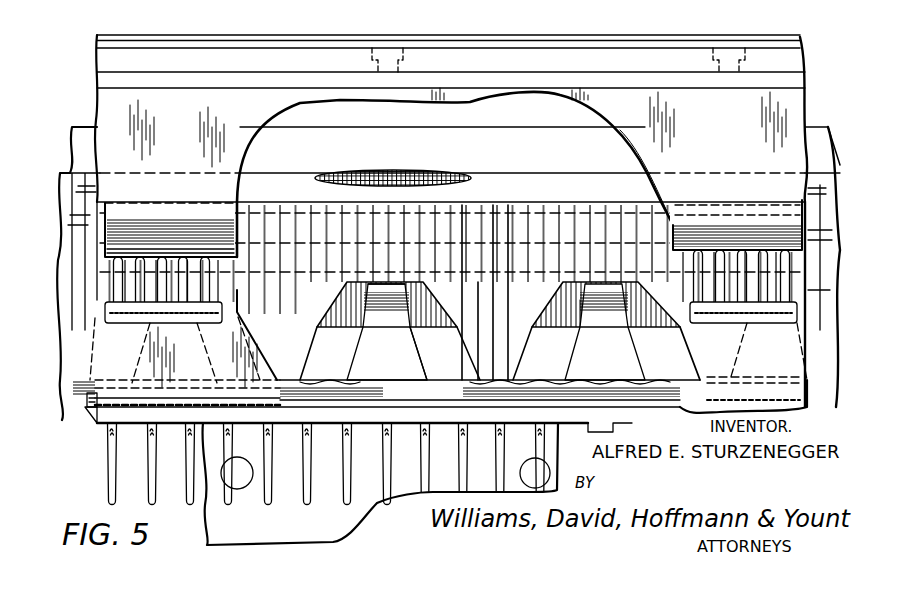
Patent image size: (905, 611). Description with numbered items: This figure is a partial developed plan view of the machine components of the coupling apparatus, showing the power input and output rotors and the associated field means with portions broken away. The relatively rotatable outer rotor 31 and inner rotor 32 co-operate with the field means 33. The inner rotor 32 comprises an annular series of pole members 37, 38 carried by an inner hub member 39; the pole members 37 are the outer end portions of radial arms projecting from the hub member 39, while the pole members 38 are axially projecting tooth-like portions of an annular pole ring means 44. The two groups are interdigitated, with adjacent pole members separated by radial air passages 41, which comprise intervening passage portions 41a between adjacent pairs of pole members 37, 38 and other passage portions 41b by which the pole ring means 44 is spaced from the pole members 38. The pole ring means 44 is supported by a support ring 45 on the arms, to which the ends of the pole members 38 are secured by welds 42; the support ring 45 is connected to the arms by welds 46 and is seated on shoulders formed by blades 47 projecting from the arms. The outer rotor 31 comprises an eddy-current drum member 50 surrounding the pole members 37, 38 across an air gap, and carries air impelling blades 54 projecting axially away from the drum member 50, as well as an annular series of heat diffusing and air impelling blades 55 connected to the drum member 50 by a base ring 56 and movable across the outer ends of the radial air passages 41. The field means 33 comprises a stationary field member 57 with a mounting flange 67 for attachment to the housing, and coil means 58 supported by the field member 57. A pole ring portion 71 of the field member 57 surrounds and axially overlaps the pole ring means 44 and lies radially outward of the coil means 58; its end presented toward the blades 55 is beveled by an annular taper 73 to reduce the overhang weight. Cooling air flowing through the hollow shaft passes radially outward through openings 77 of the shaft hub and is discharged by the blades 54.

The mounting flange 67 is at (318, 24).
The field member 57 is at (542, 42).
The field means 33 is at (816, 96).
The inner hub member 39 is at (490, 140).
The coil means 58 is at (378, 160).
The pole ring means 44 is at (532, 202).
The pole ring portion 71 is at (652, 186).
The annular taper 73 is at (672, 238).
The heat diffusing and air impelling blades 55 is at (207, 283).
The inner rotor 32 is at (72, 334).
The base ring 56 is at (112, 323).
The intervening passage portions 41a is at (304, 322).
The passage portions 41b is at (395, 292).
The radial air passages 41 is at (436, 322).
The support ring 45 is at (303, 292).
The blades 47 is at (400, 380).
The pole members 37 is at (410, 363).
The pole members 38 is at (500, 365).
The welds 42 is at (508, 382).
The welds 46 is at (613, 381).
The eddy-current drum member 50 is at (104, 366).
The outer rotor 31 is at (96, 419).
The openings 77 is at (243, 480).
The air impelling blades 54 is at (308, 490).